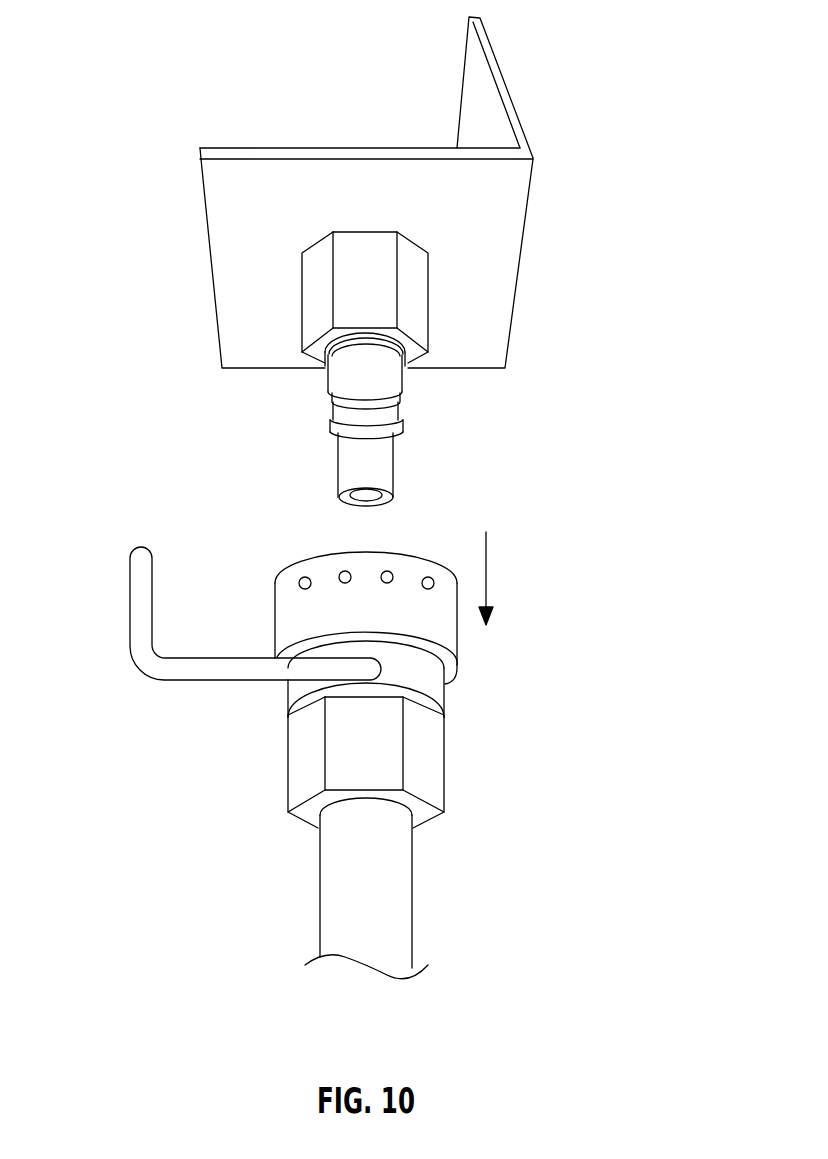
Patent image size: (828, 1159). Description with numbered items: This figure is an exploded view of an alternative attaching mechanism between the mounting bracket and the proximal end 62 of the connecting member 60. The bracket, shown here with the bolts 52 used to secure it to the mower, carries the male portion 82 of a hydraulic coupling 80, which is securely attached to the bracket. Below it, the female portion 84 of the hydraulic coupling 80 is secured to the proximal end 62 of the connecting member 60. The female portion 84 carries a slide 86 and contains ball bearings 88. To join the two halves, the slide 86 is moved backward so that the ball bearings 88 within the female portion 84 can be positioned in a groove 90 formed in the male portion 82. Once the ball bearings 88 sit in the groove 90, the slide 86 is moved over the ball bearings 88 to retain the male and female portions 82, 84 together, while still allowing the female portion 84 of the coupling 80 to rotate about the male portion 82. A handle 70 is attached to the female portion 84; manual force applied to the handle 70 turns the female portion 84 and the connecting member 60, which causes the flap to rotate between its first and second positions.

The bolts 52 is at (500, 227).
The connecting member 60 is at (353, 838).
The proximal end 62 is at (318, 878).
The handle 70 is at (140, 605).
The hydraulic coupling 80 is at (607, 310).
The male portion 82 is at (361, 369).
The female portion 84 is at (260, 746).
The slide 86 is at (328, 627).
The ball bearings 88 is at (296, 586).
The groove 90 is at (402, 420).